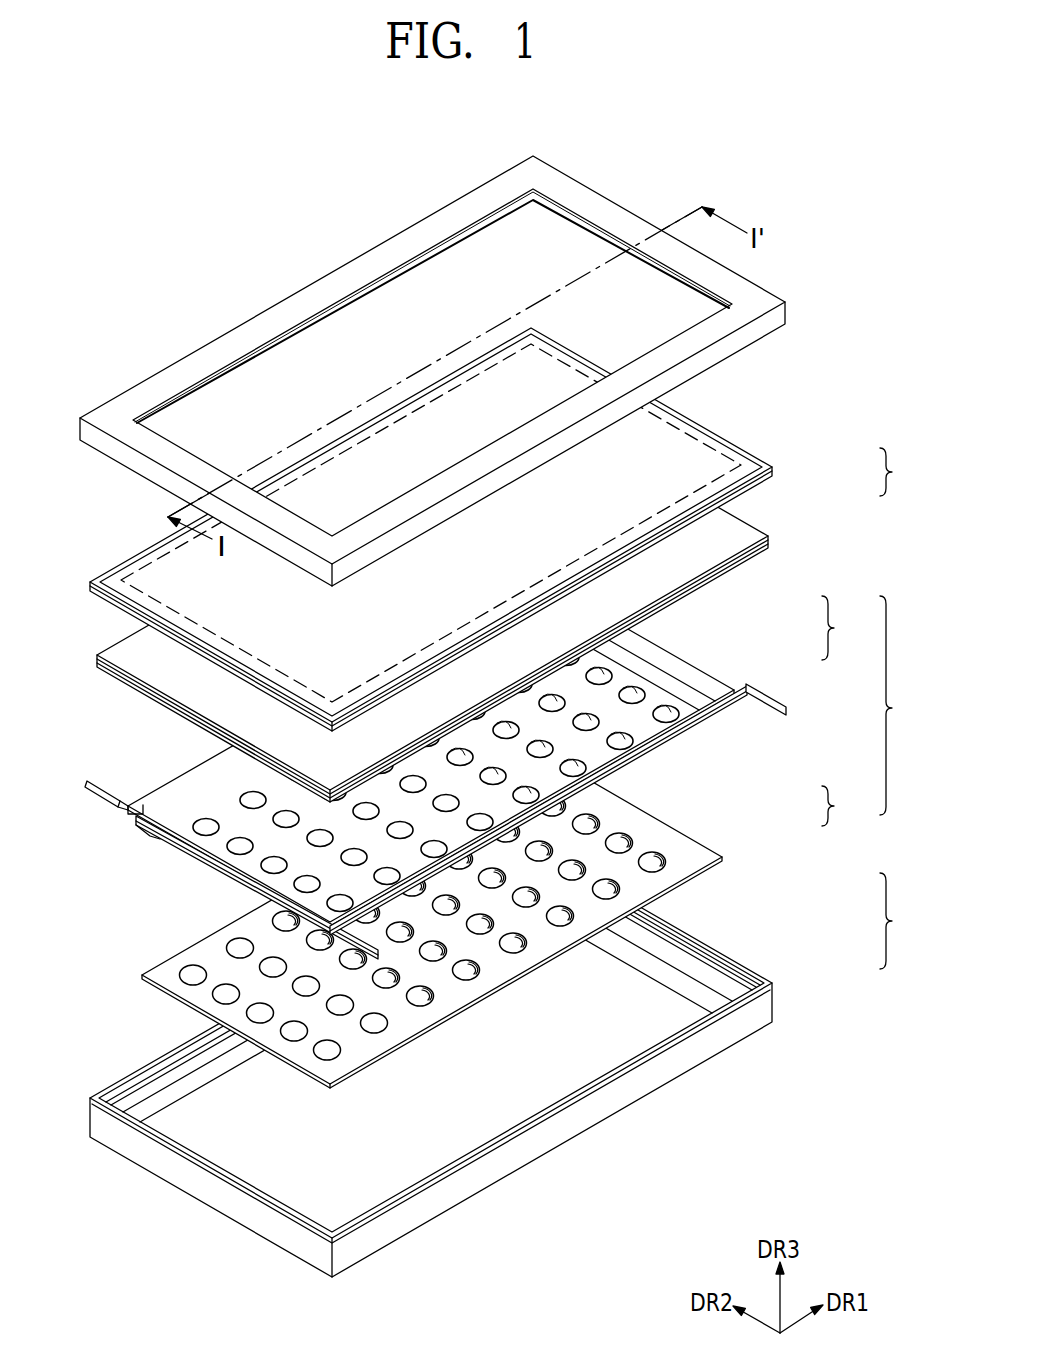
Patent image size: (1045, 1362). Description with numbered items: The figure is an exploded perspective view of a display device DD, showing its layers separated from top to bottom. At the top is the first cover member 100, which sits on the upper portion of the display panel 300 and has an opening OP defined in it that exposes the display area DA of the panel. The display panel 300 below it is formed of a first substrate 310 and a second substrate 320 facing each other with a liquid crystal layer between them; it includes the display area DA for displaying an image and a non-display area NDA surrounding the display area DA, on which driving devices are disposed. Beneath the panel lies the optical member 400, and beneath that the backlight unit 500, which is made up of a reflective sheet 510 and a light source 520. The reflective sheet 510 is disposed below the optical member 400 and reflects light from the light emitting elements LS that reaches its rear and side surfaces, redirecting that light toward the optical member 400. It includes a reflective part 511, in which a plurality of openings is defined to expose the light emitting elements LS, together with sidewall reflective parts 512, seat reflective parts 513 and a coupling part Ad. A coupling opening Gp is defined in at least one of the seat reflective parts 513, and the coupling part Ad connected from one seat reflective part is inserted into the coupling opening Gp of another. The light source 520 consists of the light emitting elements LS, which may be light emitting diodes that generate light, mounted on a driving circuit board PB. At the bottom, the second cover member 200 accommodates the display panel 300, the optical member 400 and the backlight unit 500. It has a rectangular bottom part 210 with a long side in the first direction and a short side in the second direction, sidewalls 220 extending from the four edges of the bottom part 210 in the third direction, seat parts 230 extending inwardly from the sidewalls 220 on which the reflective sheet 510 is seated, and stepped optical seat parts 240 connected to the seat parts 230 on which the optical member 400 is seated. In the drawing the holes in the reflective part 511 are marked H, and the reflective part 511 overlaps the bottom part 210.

The first cover member 100 is at (475, 371).
The display panel 300 is at (510, 529).
The first substrate 310 is at (776, 473).
The second substrate 320 is at (775, 466).
The optical member 400 is at (768, 544).
The backlight unit 500 is at (480, 831).
The reflective sheet 510 is at (499, 750).
The reflective part 511 is at (632, 672).
The sidewall reflective parts 512 is at (693, 678).
The seat reflective parts 513 is at (720, 672).
The light source 520 is at (506, 918).
The second cover member 200 is at (510, 1060).
The bottom part 210 is at (622, 977).
The sidewalls 220 is at (682, 977).
The seat parts 230 is at (717, 977).
The optical seat parts 240 is at (750, 978).
The display device DD is at (678, 166).
The opening OP is at (364, 320).
The display area DA is at (700, 448).
The non-display area NDA is at (743, 443).
The light emitting elements LS is at (623, 835).
The driving circuit board PB is at (678, 848).
The coupling part Ad is at (87, 782).
The coupling opening Gp is at (122, 803).
The hole H is at (240, 843).